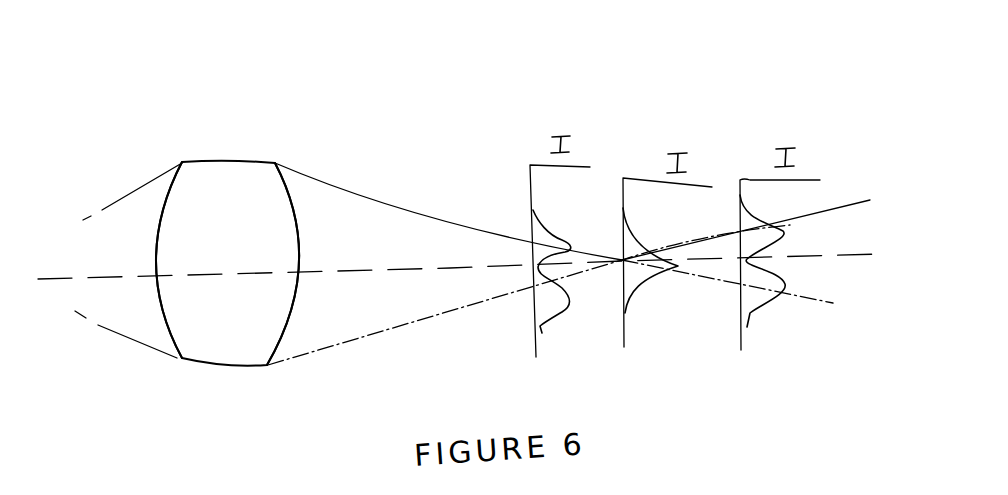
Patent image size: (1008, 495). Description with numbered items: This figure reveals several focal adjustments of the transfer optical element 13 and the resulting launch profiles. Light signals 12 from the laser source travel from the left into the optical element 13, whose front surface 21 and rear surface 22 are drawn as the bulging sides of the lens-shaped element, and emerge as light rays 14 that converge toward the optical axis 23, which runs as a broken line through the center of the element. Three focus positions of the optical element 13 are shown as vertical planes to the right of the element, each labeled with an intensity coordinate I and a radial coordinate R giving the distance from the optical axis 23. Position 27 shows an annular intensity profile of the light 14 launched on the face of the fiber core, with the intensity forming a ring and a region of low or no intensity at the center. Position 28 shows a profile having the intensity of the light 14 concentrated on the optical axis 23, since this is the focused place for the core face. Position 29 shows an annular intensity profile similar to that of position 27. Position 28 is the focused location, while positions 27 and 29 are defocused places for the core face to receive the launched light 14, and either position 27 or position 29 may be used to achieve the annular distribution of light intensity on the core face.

The light signals 12 is at (127, 197).
The transfer optical element 13 is at (230, 153).
The light rays 14 is at (343, 182).
The front lens surface 21 is at (158, 242).
The rear lens surface 22 is at (293, 217).
The optical axis 23 is at (812, 244).
The position 27 is at (530, 180).
The position 28 is at (623, 186).
The position 29 is at (733, 197).